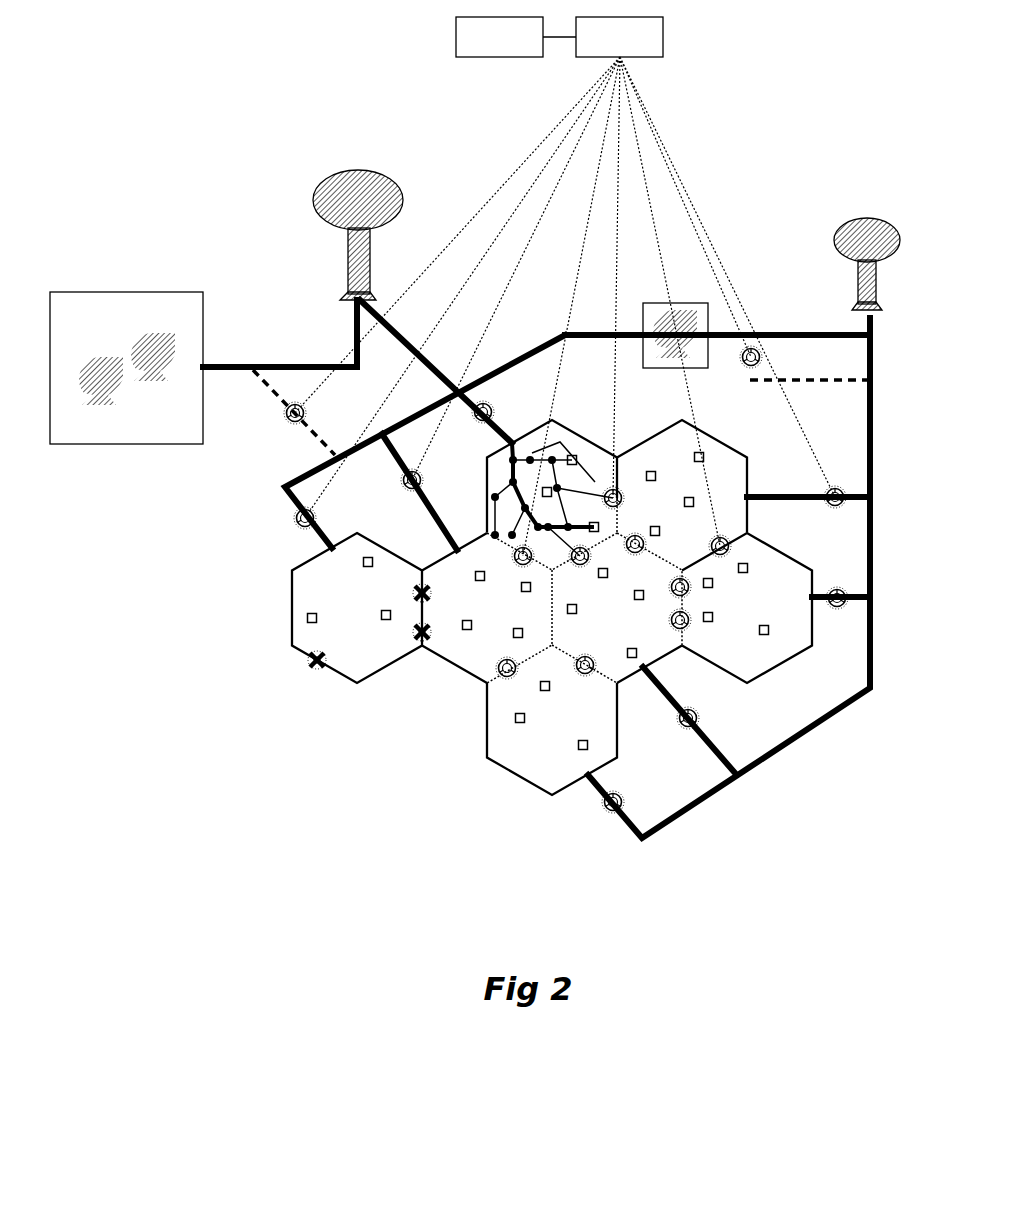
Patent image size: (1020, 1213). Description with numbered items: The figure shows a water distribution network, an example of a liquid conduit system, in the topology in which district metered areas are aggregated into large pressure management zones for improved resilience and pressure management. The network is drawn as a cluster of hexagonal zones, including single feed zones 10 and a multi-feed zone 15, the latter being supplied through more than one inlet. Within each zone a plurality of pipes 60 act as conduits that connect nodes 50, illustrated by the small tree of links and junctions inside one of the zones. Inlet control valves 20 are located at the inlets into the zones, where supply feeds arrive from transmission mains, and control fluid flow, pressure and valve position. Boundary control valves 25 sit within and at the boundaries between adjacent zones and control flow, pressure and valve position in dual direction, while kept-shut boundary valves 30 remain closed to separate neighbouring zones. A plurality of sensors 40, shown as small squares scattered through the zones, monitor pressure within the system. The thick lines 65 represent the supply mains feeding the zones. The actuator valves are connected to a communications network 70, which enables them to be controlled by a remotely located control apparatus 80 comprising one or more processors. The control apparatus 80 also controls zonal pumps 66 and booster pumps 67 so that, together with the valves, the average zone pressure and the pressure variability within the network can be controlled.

The single feed zone 10 is at (292, 608).
The multi-feed zone 15 is at (487, 740).
The inlet control valve 20 is at (298, 520).
The boundary control valve 25 is at (512, 562).
The kept-shut boundary valve 30 is at (414, 634).
The sensor 40 is at (308, 622).
The node 50 is at (515, 443).
The pipe 60 is at (565, 438).
The transport line 65 is at (523, 352).
The zonal pump 66 is at (123, 444).
The booster pump 67 is at (717, 300).
The communications network 70 is at (619, 37).
The control apparatus 80 is at (516, 37).